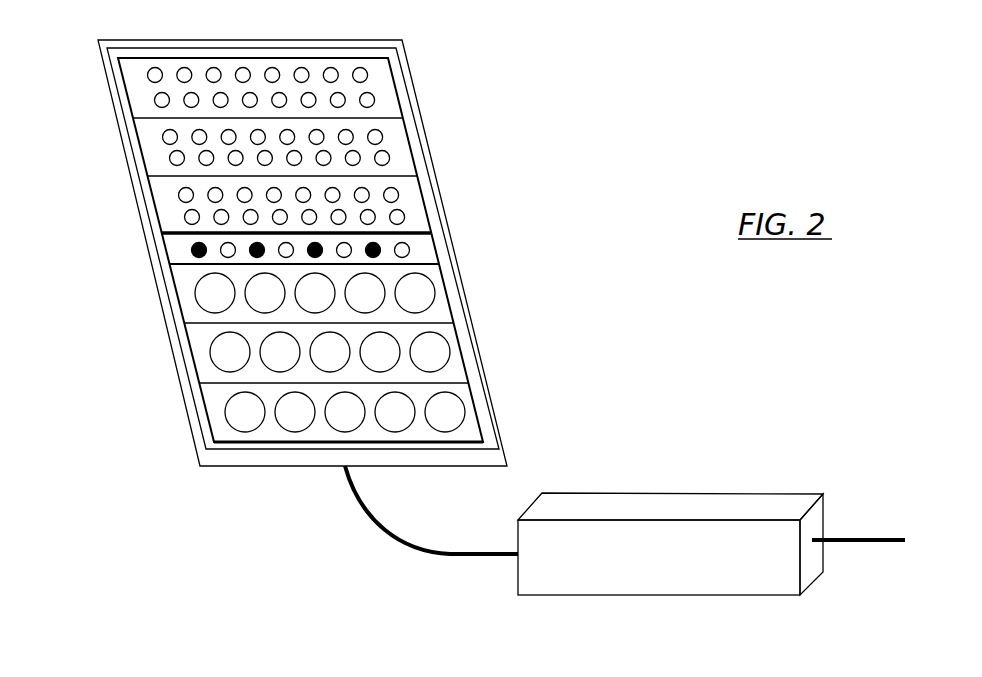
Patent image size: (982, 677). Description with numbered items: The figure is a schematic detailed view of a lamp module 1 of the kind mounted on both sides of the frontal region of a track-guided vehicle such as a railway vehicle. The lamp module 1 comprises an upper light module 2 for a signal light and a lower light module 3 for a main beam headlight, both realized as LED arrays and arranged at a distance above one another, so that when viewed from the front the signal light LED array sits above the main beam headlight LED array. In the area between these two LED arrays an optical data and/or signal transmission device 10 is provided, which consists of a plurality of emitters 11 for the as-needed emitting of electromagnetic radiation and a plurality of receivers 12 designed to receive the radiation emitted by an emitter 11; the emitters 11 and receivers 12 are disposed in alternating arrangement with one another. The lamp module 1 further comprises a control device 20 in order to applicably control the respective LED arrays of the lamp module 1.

The lamp module 1 is at (606, 94).
The upper light module 2 is at (312, 137).
The lower light module 3 is at (363, 350).
The optical data and/or signal transmission device 10 is at (420, 245).
The emitter 11 is at (197, 252).
The receiver 12 is at (222, 242).
The control device 20 is at (660, 500).